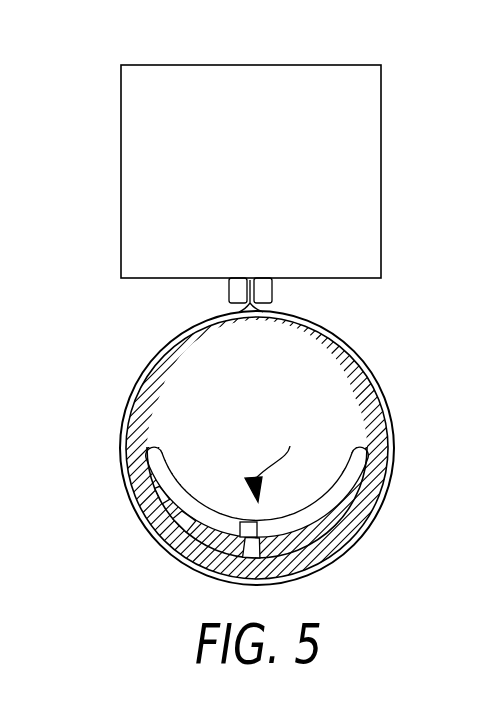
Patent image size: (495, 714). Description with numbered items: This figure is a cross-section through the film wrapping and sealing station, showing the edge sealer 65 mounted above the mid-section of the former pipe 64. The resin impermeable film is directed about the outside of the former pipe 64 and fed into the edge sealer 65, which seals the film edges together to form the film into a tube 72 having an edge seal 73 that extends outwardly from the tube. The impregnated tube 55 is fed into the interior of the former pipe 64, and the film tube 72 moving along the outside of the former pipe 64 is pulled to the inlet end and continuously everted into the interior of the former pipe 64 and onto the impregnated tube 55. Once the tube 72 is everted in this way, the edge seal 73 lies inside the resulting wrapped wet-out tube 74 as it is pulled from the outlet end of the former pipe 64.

The edge sealer 65 is at (160, 121).
The tube 72 is at (392, 433).
The edge seal 73 is at (262, 292).
The wrapped wet-out tube 74 is at (273, 459).
The impregnated tube 55 is at (172, 495).
The former pipe 64 is at (348, 522).